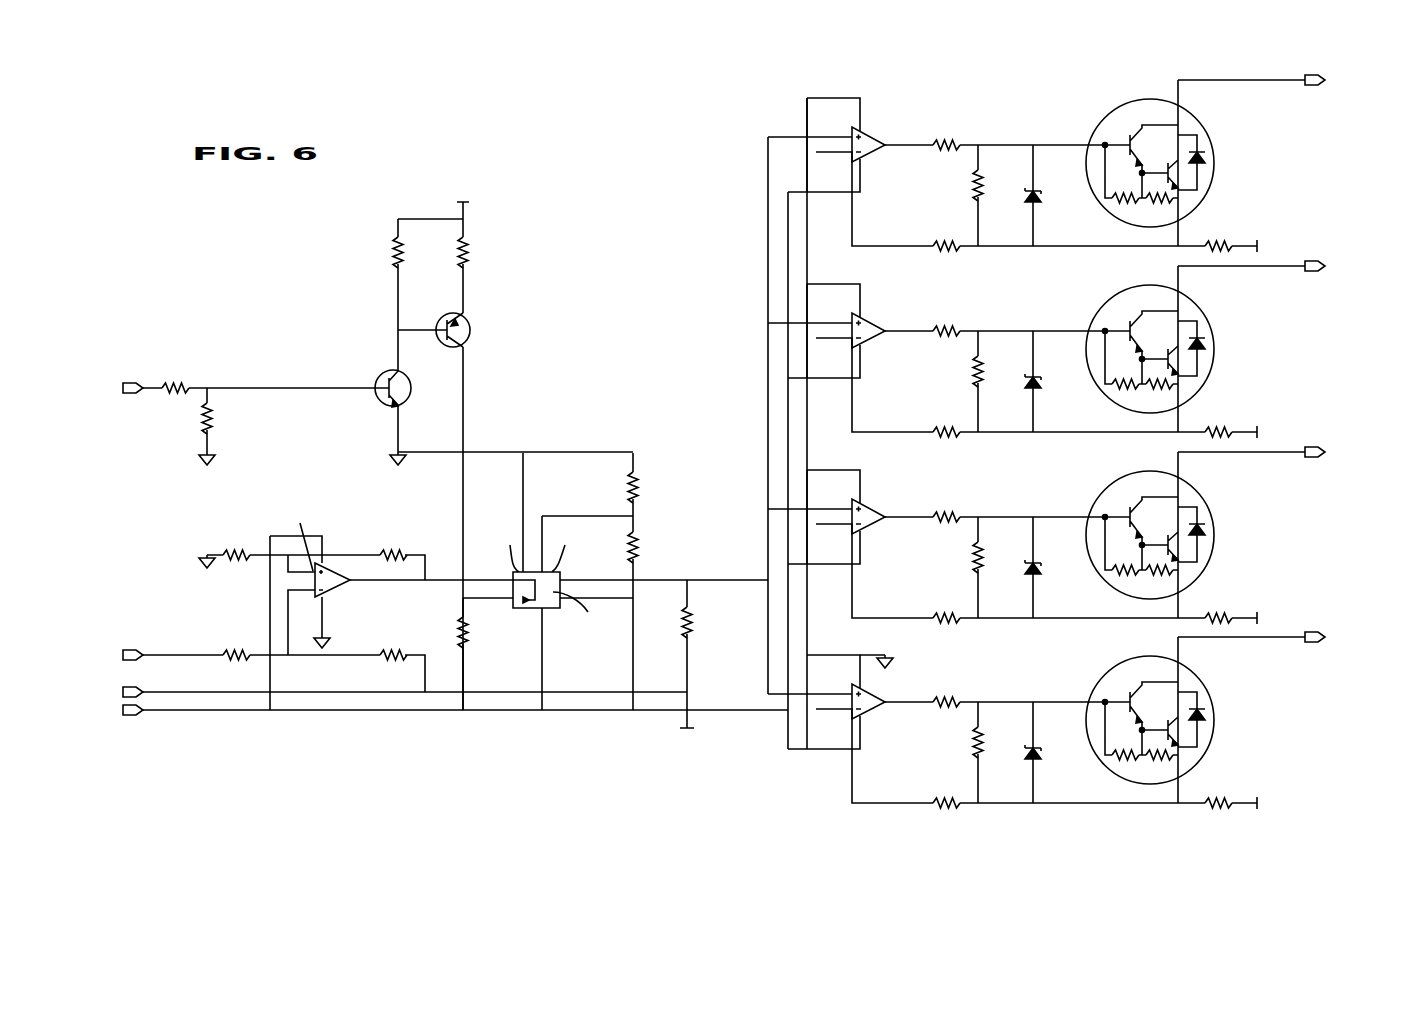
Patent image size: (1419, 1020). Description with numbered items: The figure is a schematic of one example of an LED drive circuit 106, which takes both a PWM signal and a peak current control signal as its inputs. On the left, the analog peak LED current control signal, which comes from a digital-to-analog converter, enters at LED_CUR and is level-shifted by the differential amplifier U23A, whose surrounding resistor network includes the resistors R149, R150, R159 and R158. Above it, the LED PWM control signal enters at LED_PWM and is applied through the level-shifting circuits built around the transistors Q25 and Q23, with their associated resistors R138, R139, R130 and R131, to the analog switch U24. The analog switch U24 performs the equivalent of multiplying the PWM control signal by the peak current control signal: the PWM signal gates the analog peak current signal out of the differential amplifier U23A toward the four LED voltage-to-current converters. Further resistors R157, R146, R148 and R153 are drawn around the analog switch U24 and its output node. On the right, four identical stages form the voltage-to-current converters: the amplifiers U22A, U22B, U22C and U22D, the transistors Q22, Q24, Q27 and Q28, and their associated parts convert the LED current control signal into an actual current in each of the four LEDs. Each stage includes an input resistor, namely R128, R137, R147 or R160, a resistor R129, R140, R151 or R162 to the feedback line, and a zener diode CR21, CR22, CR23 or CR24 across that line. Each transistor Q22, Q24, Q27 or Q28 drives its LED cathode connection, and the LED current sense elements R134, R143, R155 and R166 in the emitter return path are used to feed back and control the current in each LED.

The LED drive circuit 106 is at (387, 743).
The resistor R130 is at (416, 257).
The resistor R131 is at (481, 252).
The level-shifting circuit Q23 is at (455, 330).
The level-shifting circuit Q25 is at (400, 378).
The resistor R138 is at (175, 360).
The resistor R139 is at (229, 424).
The resistor R149 is at (237, 528).
The resistor R150 is at (402, 528).
The resistor R159 is at (237, 628).
The resistor R158 is at (399, 628).
The differential amplifier U23A is at (343, 560).
The resistor R157 is at (478, 644).
The analog switch U24 is at (551, 608).
The resistor R146 is at (657, 478).
The resistor R148 is at (657, 540).
The resistor R153 is at (706, 621).
The amplifier U22A is at (850, 144).
The amplifier U22B is at (850, 330).
The amplifier U22C is at (850, 517).
The amplifier U22D is at (850, 702).
The resistor R128 is at (944, 119).
The resistor R129 is at (994, 185).
The LED current sense element R134 is at (1222, 237).
The zener diode CR21 is at (1056, 195).
The transistor Q22 is at (1161, 164).
The resistor R137 is at (944, 305).
The resistor R140 is at (994, 371).
The LED current sense element R143 is at (1222, 423).
The zener diode CR22 is at (1056, 381).
The transistor Q24 is at (1161, 350).
The resistor R147 is at (944, 491).
The resistor R151 is at (994, 557).
The LED current sense element R155 is at (1222, 609).
The zener diode CR23 is at (1056, 567).
The transistor Q27 is at (1161, 536).
The resistor R160 is at (944, 676).
The resistor R162 is at (994, 742).
The LED current sense element R166 is at (1222, 794).
The zener diode CR24 is at (1056, 752).
The transistor Q28 is at (1161, 721).